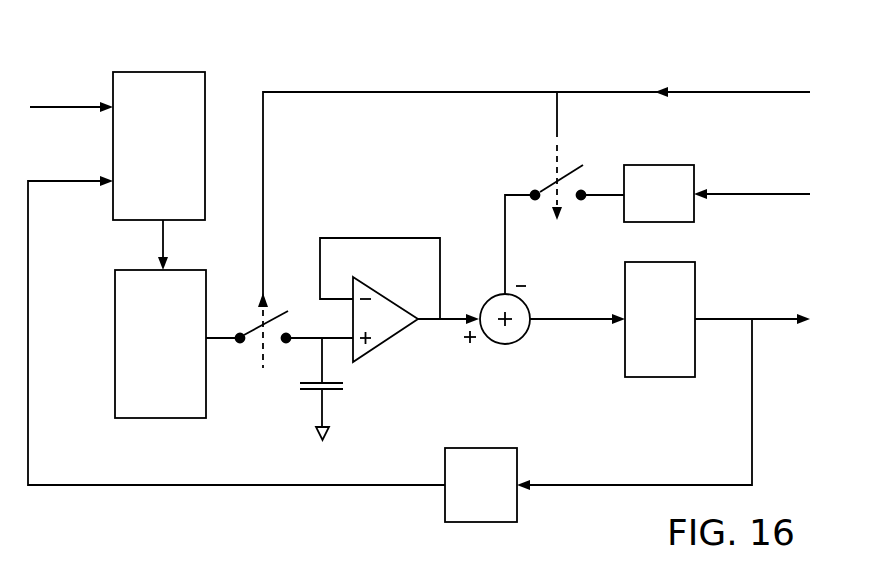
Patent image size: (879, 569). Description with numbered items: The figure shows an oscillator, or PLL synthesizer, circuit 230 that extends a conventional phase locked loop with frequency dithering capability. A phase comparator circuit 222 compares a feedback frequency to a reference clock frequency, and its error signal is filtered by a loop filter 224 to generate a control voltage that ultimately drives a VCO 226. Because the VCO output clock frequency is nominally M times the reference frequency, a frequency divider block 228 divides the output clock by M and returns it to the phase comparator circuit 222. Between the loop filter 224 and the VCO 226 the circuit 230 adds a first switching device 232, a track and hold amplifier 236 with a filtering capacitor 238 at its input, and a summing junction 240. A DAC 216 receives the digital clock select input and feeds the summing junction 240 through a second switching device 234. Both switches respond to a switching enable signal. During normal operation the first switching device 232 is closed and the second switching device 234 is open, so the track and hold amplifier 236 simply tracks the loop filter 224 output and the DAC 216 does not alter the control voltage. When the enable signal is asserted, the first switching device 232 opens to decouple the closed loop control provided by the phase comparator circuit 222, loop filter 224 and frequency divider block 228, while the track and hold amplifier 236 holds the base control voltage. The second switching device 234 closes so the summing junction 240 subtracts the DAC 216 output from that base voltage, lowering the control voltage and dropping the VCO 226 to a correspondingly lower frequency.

The DAC 216 is at (665, 165).
The phase comparator circuit 222 is at (150, 72).
The loop filter 224 is at (157, 418).
The VCO 226 is at (642, 377).
The frequency divider block 228 is at (485, 448).
The oscillator (PLL synthesizer) circuit 230 is at (695, 41).
The first switching device 232 is at (233, 316).
The second switching device 234 is at (524, 174).
The track and hold amplifier 236 is at (375, 352).
The filtering capacitor 238 is at (347, 408).
The summing junction 240 is at (512, 344).